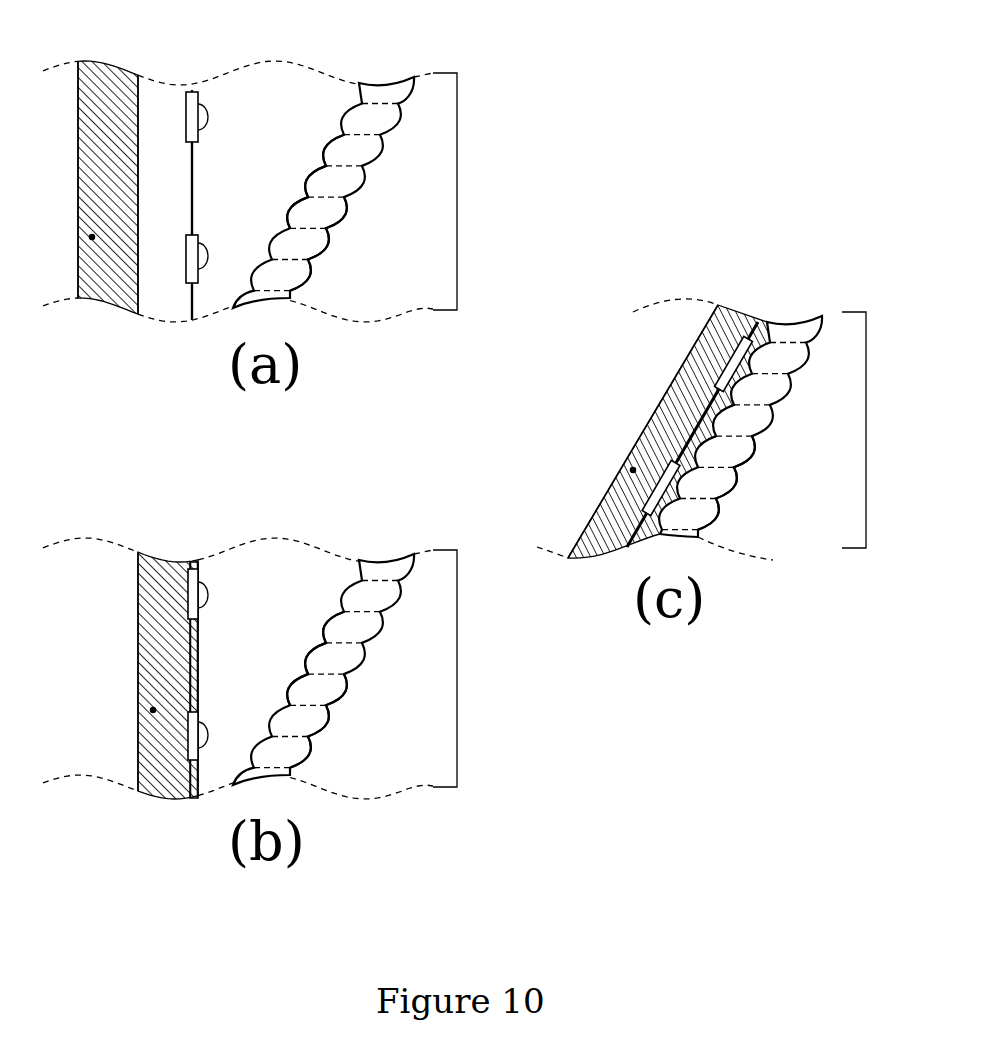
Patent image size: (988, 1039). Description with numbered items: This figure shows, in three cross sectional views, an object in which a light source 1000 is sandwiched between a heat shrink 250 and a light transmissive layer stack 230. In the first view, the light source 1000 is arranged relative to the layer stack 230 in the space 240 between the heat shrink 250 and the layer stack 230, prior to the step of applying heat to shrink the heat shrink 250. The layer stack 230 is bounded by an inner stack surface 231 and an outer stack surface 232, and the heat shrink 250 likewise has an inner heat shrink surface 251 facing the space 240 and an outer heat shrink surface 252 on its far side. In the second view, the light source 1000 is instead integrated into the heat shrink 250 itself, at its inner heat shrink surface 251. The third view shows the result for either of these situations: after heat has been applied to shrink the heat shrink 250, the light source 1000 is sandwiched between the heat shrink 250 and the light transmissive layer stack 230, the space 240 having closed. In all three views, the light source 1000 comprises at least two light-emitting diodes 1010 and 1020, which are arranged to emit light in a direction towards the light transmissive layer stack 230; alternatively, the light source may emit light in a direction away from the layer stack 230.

The layer stack 230 is at (457, 121).
The inner stack surface 231 is at (326, 241).
The outer stack surface 232 is at (303, 181).
The space 240 is at (671, 430).
The heat shrink 250 is at (88, 237).
The inner heat shrink surface 251 is at (139, 204).
The outer heat shrink surface 252 is at (78, 130).
The light source 1000 is at (192, 90).
The light-emitting diode 1010 is at (206, 117).
The light-emitting diode 1020 is at (206, 259).